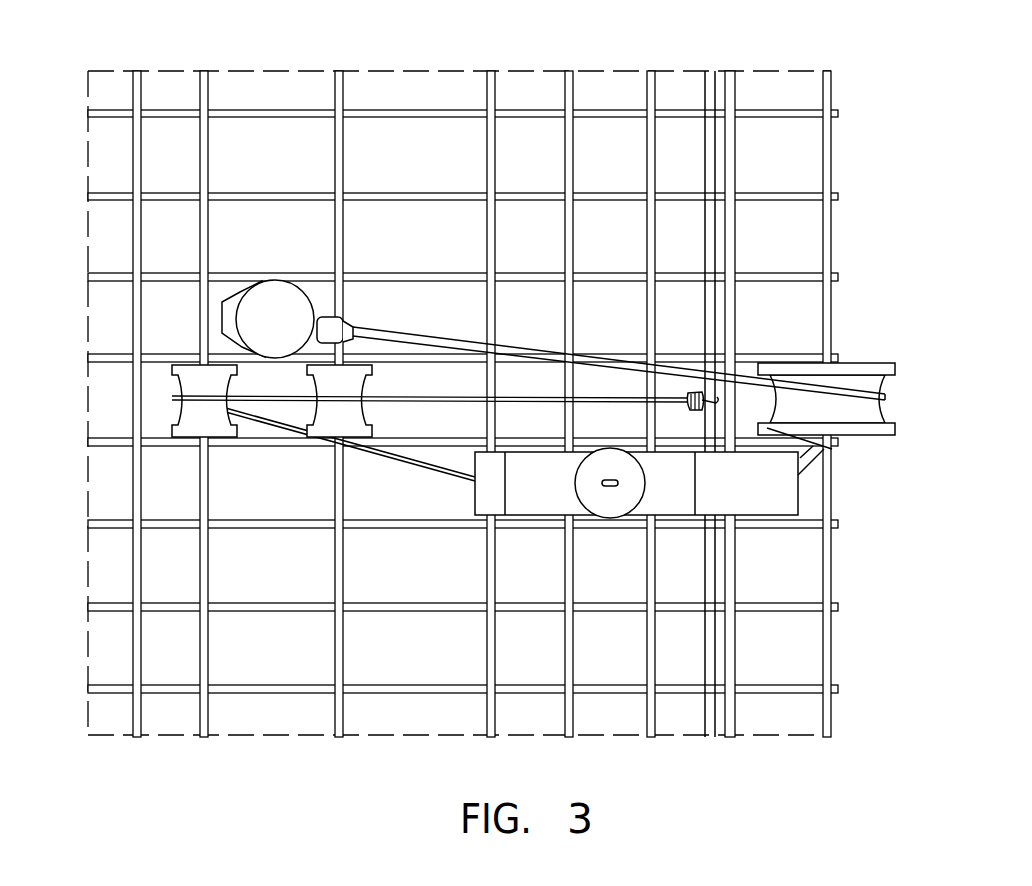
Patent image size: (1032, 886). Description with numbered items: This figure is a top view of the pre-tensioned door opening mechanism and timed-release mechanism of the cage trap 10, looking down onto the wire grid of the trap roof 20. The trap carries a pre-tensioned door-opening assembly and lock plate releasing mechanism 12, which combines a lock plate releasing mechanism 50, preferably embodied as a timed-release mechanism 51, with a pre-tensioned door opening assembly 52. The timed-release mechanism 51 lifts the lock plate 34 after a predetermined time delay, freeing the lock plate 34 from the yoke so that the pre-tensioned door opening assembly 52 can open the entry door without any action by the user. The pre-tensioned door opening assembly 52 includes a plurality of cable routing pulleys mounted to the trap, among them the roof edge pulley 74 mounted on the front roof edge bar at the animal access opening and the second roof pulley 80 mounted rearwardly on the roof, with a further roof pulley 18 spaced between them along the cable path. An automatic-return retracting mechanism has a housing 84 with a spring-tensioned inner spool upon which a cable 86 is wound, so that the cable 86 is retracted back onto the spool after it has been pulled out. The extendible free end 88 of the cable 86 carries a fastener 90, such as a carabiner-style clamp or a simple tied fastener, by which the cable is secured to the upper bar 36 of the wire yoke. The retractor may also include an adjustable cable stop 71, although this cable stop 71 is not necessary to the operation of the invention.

The cage trap 10 is at (223, 447).
The pre-tensioned door-opening assembly and lock plate releasing mechanism 12 is at (262, 276).
The second roller 18 is at (345, 420).
The grid frame 20 is at (138, 252).
The lock plate 34 is at (780, 502).
The upper bar 36 is at (710, 657).
The lock plate releasing mechanism 50 is at (609, 531).
The timed-release mechanism 51 is at (598, 498).
The pre-tensioned door opening assembly 52 is at (840, 388).
The adjustable cable stop 71 is at (340, 317).
The roof edge pulley 74 is at (868, 383).
The second roof pulley 80 is at (190, 383).
The housing 84 is at (288, 305).
The cable 86 is at (687, 375).
The extendible free end 88 is at (673, 402).
The fastener 90 is at (833, 449).